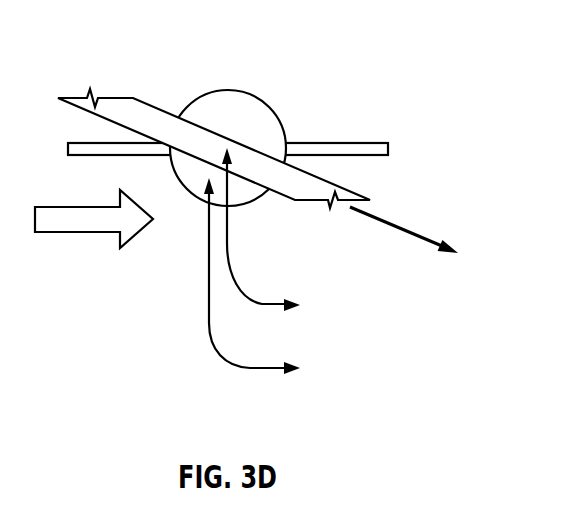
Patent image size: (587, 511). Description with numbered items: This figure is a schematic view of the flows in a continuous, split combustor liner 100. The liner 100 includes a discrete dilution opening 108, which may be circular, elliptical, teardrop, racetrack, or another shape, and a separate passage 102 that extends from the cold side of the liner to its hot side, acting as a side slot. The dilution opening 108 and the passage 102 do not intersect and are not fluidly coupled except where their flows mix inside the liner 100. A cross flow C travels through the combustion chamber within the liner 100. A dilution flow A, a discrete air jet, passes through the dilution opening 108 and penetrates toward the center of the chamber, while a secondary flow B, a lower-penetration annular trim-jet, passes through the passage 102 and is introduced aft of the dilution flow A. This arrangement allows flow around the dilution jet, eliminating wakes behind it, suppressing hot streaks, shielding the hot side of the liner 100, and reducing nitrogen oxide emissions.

The liner 100 is at (358, 143).
The passage 102 is at (122, 112).
The dilution opening 108 is at (229, 89).
The dilution flow A is at (228, 228).
The secondary flow B is at (407, 230).
The cross flow C is at (68, 233).